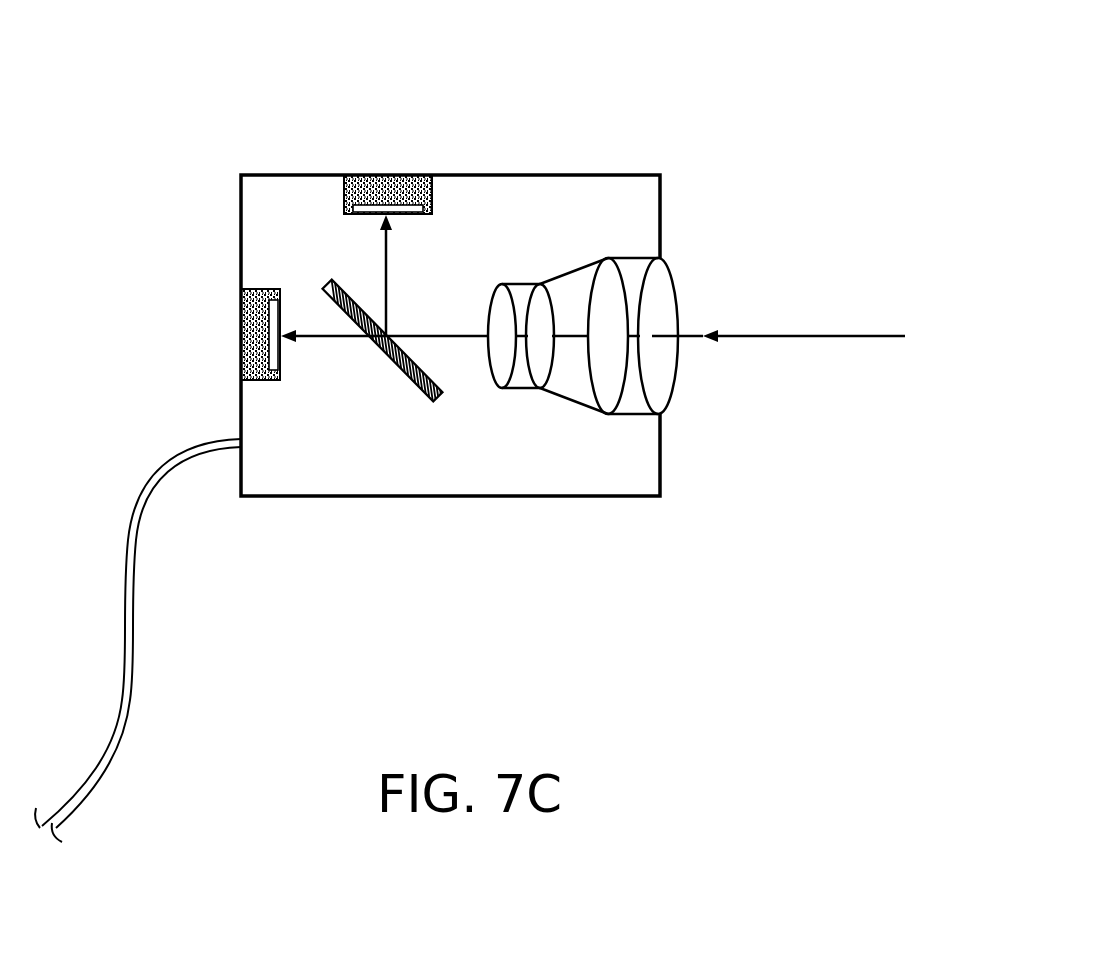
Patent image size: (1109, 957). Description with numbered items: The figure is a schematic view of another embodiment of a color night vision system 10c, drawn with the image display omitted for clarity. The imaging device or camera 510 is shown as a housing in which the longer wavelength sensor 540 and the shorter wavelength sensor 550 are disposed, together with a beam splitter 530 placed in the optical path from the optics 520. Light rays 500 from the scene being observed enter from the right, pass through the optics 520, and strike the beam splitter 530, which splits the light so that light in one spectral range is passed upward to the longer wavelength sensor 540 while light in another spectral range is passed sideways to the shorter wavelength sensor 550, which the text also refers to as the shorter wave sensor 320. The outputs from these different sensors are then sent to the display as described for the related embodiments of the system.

The color night vision system 10c is at (805, 53).
The shorter wave sensor 320 is at (692, 547).
The light rays 500 is at (818, 333).
The imaging device or camera 510 is at (579, 175).
The optics 520 is at (676, 387).
The beam splitter 530 is at (417, 388).
The longer wavelength sensor 540 is at (386, 174).
The shorter wavelength sensor 550 is at (241, 338).